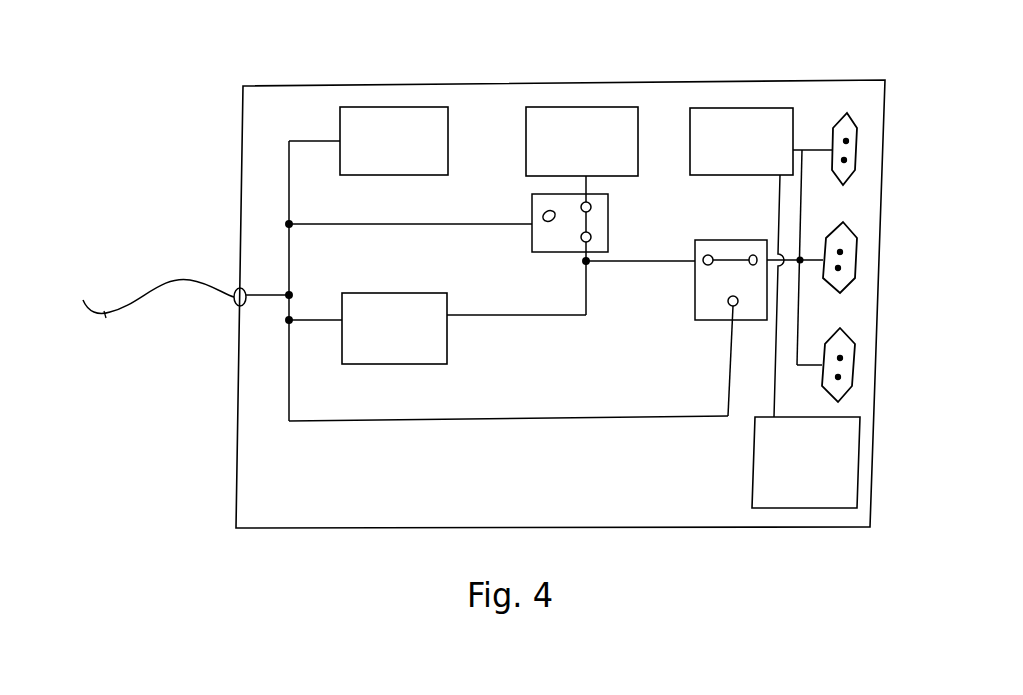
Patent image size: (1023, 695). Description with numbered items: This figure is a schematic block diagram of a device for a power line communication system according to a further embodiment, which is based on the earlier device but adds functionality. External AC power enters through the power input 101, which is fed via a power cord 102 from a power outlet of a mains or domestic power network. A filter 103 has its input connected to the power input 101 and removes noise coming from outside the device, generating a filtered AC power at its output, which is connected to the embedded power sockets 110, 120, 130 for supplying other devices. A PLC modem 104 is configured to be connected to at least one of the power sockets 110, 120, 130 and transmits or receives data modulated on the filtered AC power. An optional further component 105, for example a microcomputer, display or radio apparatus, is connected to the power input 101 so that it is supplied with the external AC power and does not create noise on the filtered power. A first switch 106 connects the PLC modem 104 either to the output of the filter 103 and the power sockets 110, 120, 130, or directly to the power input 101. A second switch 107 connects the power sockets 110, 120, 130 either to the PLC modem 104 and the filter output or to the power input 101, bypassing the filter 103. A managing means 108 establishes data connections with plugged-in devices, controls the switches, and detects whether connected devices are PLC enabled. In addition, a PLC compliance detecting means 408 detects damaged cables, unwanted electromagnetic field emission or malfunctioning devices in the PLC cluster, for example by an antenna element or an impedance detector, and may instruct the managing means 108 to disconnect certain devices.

The power input 101 is at (232, 310).
The power cord 102 is at (146, 319).
The filter 103 is at (393, 364).
The PLC modem 104 is at (577, 107).
The further component 105 is at (392, 107).
The first switch 106 is at (610, 213).
The second switch 107 is at (700, 320).
The managing means 108 is at (742, 107).
The power socket 110 is at (857, 150).
The power socket 120 is at (857, 258).
The power socket 130 is at (855, 362).
The PLC compliance detecting means 408 is at (805, 510).